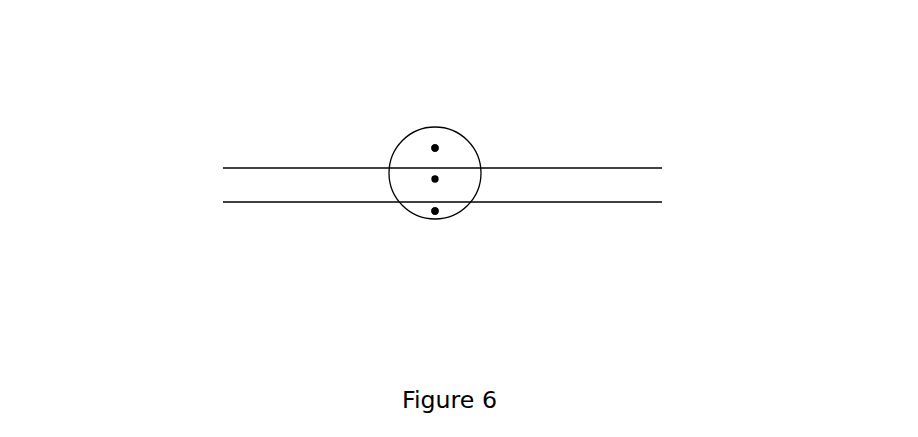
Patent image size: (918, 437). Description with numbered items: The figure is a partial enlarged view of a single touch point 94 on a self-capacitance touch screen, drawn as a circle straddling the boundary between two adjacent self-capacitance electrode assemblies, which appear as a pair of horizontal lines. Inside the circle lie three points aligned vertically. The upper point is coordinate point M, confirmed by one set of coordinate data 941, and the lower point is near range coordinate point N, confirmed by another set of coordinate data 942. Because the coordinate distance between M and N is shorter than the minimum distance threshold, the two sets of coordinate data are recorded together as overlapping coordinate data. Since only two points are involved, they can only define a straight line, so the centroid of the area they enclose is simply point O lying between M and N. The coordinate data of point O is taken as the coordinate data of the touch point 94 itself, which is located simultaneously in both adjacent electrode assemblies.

The touch point 94 is at (390, 150).
The coordinate data of point M 941 is at (437, 127).
The coordinate data of point N 942 is at (439, 222).
The coordinate point M is at (435, 148).
The near range coordinate point N is at (435, 214).
The point O is at (435, 179).